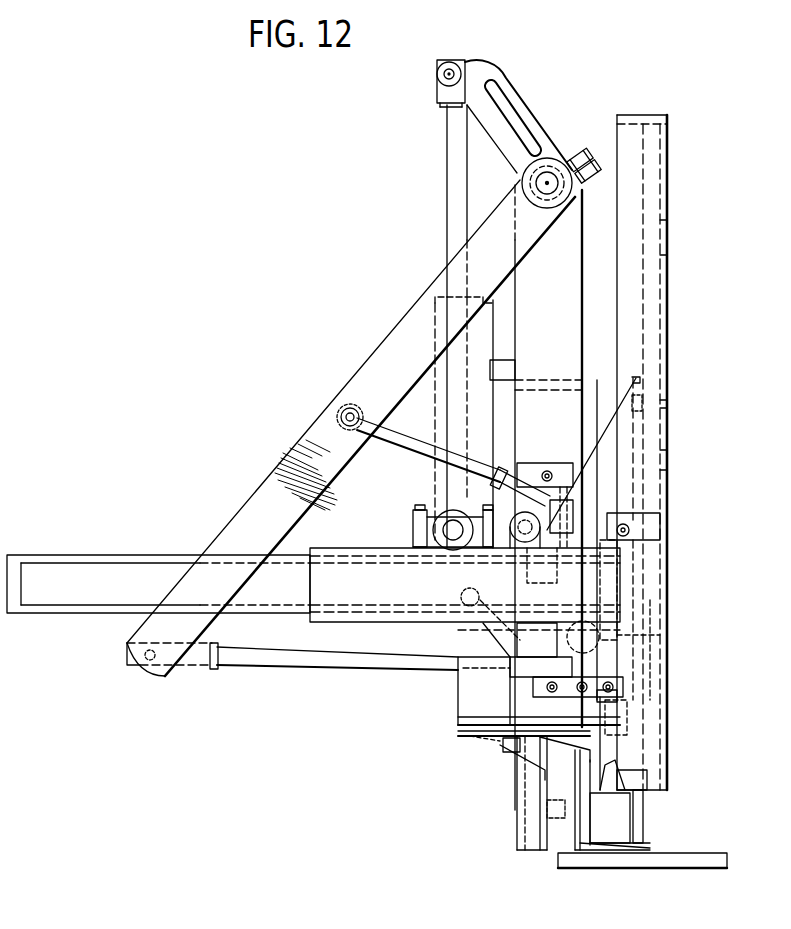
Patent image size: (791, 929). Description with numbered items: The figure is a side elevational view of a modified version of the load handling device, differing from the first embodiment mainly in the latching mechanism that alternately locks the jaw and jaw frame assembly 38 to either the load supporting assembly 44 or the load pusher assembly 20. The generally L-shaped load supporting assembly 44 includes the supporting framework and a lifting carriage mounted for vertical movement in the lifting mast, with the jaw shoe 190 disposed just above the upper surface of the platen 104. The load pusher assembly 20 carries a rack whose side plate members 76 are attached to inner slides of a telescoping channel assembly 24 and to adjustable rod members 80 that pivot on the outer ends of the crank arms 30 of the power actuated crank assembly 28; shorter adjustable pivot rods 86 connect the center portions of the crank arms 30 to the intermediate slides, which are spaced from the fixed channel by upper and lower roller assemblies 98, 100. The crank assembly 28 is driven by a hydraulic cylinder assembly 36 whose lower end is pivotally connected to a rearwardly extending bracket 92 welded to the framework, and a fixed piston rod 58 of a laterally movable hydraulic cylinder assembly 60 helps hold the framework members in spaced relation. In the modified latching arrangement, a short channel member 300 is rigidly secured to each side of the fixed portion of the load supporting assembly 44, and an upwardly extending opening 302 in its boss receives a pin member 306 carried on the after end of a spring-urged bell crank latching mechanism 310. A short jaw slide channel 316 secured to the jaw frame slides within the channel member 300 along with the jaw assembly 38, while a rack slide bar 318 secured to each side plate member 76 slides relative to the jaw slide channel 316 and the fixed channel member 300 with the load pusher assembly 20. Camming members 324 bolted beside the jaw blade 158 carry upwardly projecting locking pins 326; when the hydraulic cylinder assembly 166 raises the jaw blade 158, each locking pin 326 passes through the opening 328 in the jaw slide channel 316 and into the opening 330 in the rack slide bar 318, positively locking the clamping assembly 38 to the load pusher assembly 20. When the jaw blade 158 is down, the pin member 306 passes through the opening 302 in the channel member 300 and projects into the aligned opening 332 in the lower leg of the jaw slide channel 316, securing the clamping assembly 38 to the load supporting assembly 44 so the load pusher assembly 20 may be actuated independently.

The load pusher assembly 20 is at (680, 305).
The telescoping channel assembly 24 is at (372, 545).
The power actuated crank assembly 28 is at (541, 107).
The crank arm 30 is at (272, 480).
The hydraulic cylinder assembly 36 is at (440, 396).
The jaw and jaw frame assembly 38 is at (653, 820).
The load supporting assembly 44 is at (543, 862).
The fixed piston rod 58 is at (500, 482).
The laterally movable hydraulic cylinder assembly 60 is at (495, 510).
The side plate member 76 is at (598, 445).
The adjustable rod member 80 is at (311, 666).
The adjustable pivot rod 86 is at (423, 445).
The rearwardly extending bracket 92 is at (507, 630).
The upper roller assembly 98 is at (428, 506).
The lower roller assembly 100 is at (647, 635).
The platen 104 is at (672, 858).
The jaw blade 158 is at (637, 803).
The hydraulic cylinder assembly 166 is at (640, 585).
The jaw shoe 190 is at (610, 845).
The short channel member 300 is at (458, 733).
The opening 302 is at (500, 745).
The pin member 306 is at (517, 757).
The bell crank latching mechanism 310 is at (530, 772).
The jaw slide channel 316 is at (458, 722).
The rack slide bar 318 is at (470, 690).
The camming member 324 is at (613, 810).
The locking pin 326 is at (625, 779).
The opening 328 is at (650, 728).
The opening 330 is at (655, 700).
The opening 332 is at (470, 738).